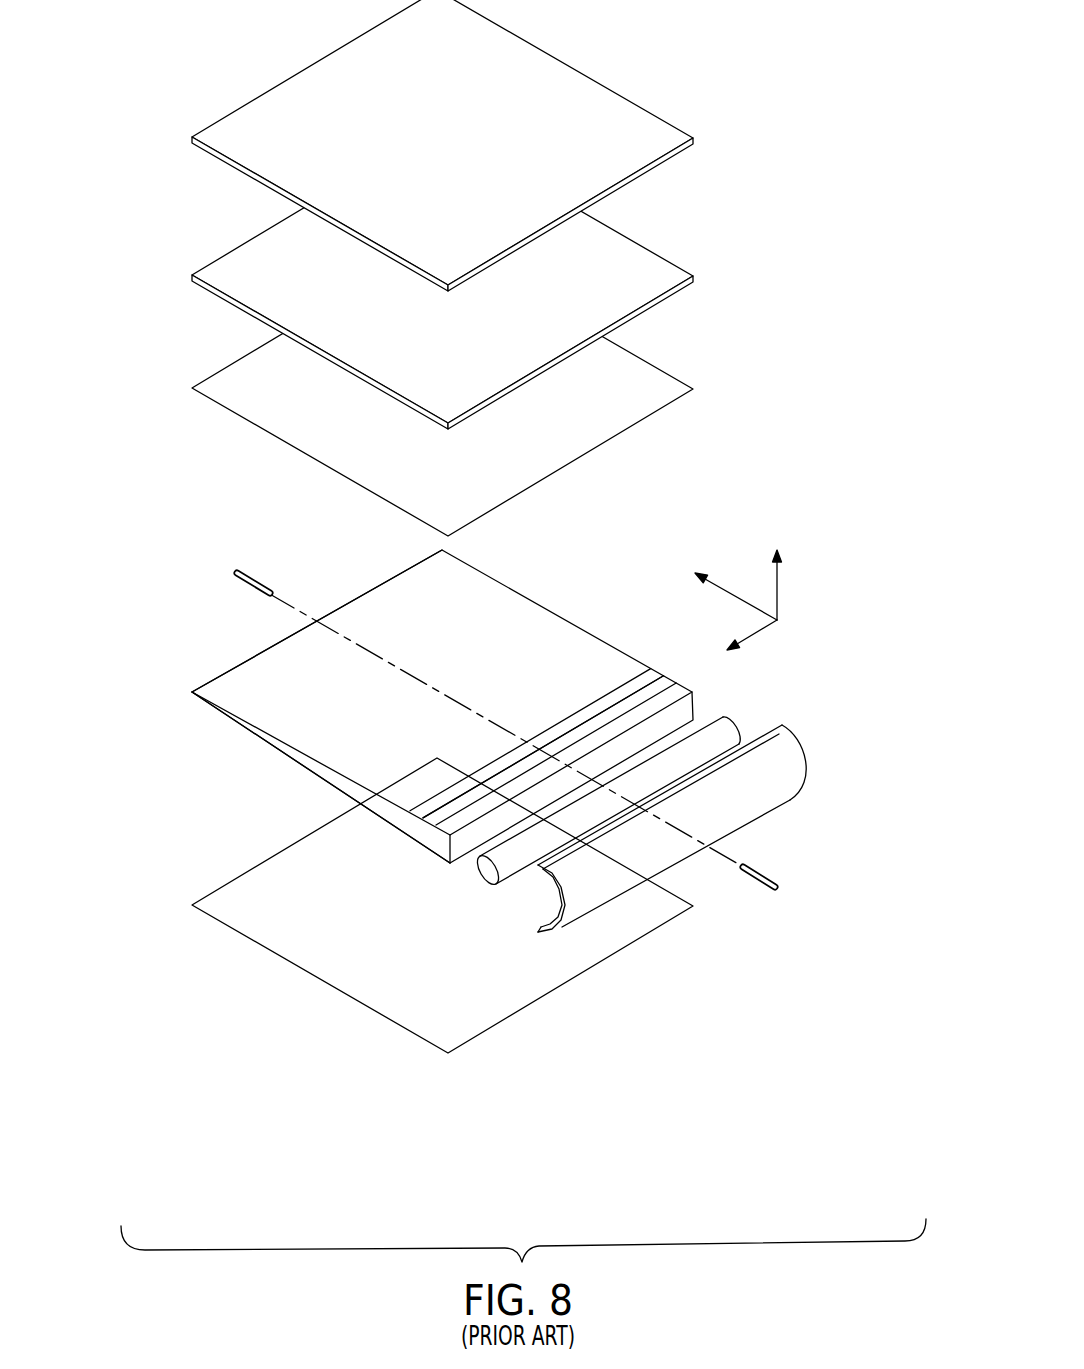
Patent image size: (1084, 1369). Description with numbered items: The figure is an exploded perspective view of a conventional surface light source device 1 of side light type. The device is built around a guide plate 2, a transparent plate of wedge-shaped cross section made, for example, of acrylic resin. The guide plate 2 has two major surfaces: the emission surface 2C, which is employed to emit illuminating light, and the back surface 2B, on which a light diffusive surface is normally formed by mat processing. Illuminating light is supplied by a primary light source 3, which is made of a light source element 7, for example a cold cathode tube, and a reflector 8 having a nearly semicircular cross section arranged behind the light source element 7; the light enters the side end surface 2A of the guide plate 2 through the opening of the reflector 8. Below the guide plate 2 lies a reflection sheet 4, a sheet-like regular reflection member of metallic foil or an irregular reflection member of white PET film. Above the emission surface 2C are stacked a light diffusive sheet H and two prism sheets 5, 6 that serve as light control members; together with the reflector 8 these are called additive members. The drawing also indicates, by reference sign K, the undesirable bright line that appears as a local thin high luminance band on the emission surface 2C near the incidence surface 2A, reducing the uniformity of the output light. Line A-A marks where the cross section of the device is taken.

The surface light source device 1 is at (298, 1168).
The guide plate 2 is at (442, 706).
The side end surface 2A is at (632, 745).
The back surface 2B is at (278, 779).
The emission surface 2C is at (255, 668).
The primary light source 3 is at (507, 741).
The reflection sheet 4 is at (613, 1085).
The prism sheet 5 is at (620, 308).
The prism sheet 6 is at (620, 170).
The light source element 7 is at (507, 863).
The reflector 8 is at (635, 872).
The light diffusive sheet H is at (620, 423).
The bright line K is at (473, 800).
The line A- A is at (327, 542).